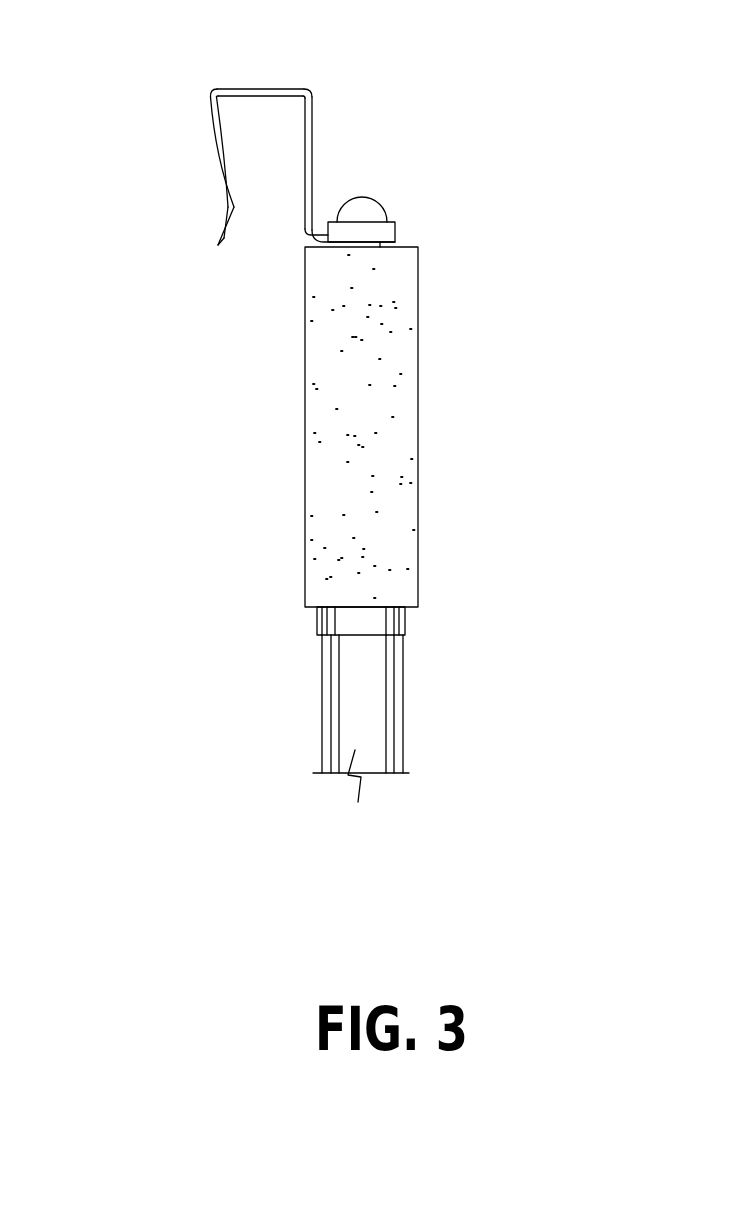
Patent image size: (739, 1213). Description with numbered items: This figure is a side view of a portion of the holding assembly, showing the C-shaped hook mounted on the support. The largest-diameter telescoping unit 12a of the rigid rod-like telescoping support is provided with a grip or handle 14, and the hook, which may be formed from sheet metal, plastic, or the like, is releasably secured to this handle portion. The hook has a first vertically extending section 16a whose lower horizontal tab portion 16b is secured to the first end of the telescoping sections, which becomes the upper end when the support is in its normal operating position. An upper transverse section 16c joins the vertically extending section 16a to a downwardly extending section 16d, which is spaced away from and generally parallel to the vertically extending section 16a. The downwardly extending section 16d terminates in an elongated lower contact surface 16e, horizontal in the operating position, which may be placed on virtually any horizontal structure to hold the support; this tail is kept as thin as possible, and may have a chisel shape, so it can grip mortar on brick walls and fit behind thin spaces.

The telescoping unit 12a is at (405, 625).
The grip or handle 14 is at (418, 377).
The first vertically extending section 16a is at (312, 165).
The lower horizontal tab portion 16b is at (304, 243).
The upper transverse section 16c is at (262, 89).
The downwardly extending section 16d is at (219, 156).
The elongated lower contact surface 16e is at (220, 245).